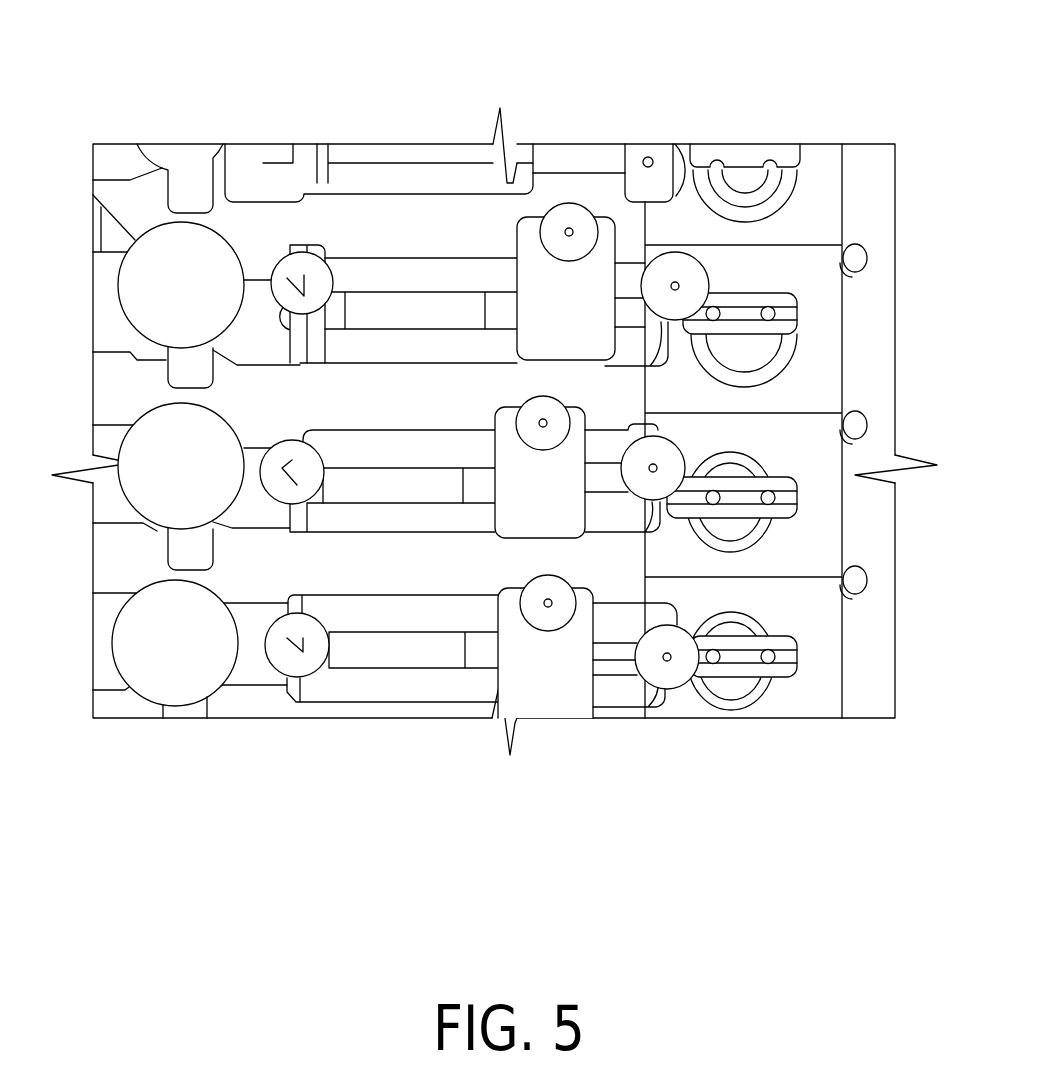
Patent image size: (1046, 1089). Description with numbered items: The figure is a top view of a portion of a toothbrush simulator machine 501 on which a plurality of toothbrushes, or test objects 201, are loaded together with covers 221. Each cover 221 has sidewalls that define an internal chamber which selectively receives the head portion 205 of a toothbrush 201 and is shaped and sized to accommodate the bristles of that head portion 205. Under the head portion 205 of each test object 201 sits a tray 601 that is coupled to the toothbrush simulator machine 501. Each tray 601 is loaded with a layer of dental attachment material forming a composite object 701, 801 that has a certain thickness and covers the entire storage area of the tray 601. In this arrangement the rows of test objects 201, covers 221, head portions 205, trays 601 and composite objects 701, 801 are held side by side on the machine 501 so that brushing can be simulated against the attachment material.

The toothbrush simulator machine 501 is at (368, 232).
The test object 201 is at (339, 521).
The cover 221 is at (814, 477).
The head portion 205 is at (815, 477).
The composite object 701 is at (815, 518).
The guide 801 is at (792, 521).
The tray 601 is at (757, 542).